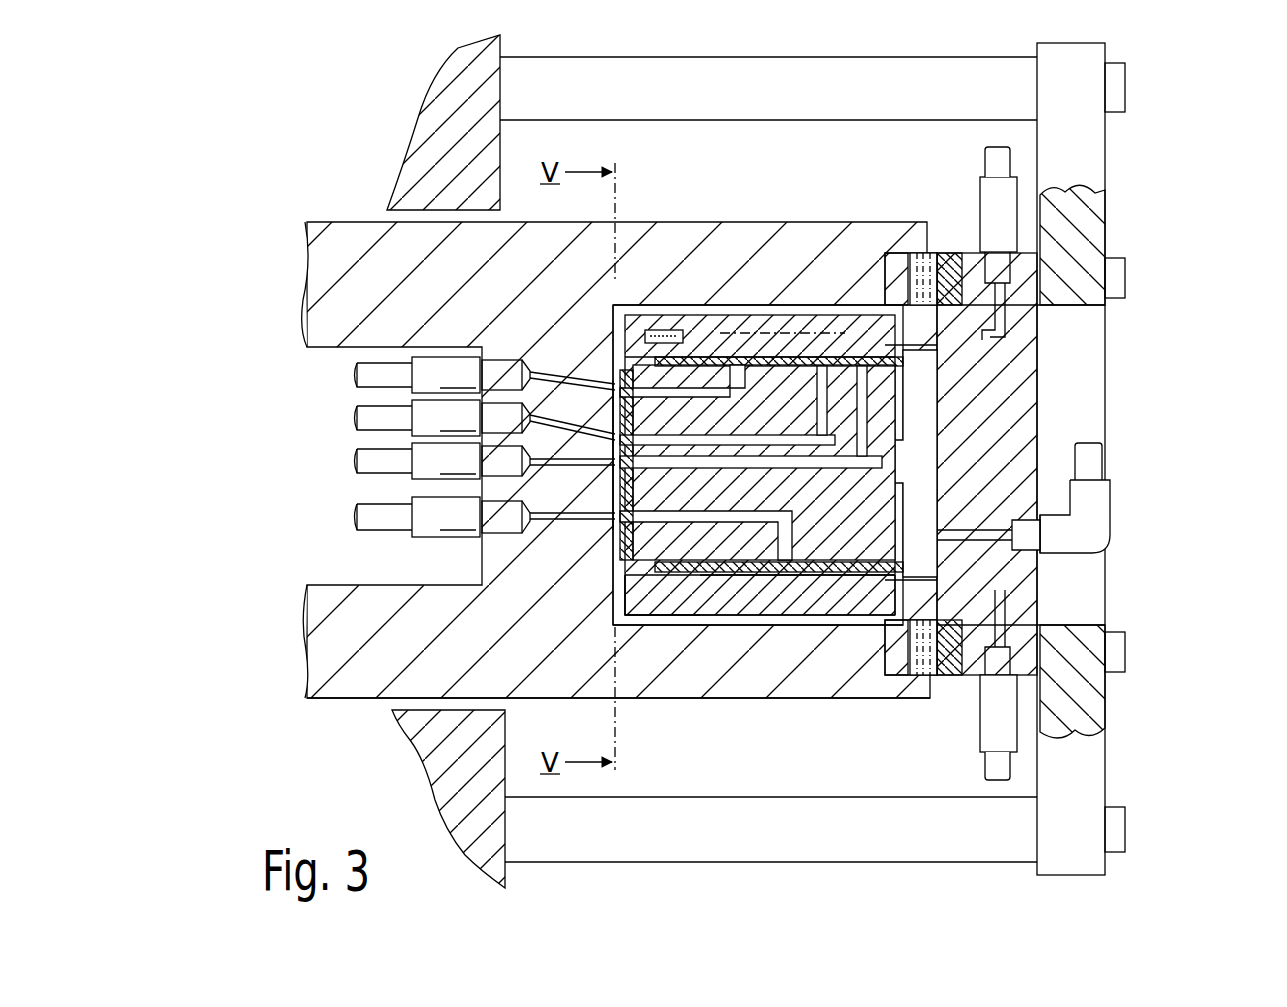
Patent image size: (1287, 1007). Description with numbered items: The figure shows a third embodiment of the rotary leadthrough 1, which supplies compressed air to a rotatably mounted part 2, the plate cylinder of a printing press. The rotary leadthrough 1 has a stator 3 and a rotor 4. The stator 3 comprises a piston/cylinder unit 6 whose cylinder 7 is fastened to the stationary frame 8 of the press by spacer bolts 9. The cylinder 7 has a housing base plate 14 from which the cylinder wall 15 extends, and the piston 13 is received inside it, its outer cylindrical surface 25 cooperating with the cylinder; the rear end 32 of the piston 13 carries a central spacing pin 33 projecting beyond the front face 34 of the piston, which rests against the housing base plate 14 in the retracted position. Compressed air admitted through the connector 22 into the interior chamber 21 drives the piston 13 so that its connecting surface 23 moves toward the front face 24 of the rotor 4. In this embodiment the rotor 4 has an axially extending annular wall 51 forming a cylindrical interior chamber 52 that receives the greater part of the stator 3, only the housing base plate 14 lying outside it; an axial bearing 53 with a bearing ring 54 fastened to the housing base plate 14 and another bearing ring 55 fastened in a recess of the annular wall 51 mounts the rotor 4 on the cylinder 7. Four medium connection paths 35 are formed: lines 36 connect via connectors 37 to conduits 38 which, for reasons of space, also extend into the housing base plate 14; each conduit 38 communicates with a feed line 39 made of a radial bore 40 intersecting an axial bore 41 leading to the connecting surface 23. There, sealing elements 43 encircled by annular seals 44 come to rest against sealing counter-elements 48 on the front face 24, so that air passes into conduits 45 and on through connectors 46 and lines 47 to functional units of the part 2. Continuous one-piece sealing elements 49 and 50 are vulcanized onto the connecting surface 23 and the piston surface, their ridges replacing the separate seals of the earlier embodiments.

The rotary leadthrough 1 is at (367, 197).
The rotatably mounted part 2 is at (330, 305).
The stator 3 is at (1108, 245).
The rotor 4 is at (395, 668).
The piston/cylinder unit 6 is at (1082, 357).
The cylinder 7 is at (762, 598).
The stationary frame 8 is at (490, 853).
The spacer bolts 9 is at (625, 85).
The piston 13 is at (733, 585).
The housing base plate 14 is at (1013, 418).
The cylinder wall 15 is at (790, 322).
The interior chamber 21 is at (917, 557).
The connector 22 is at (1117, 498).
The connecting surface 23 is at (690, 345).
The front face 24 is at (617, 390).
The outer cylindrical surface 25 is at (833, 565).
The rear end 32 is at (1040, 487).
The spacing pin 33 is at (920, 463).
The front face of the piston 34 is at (910, 400).
The medium connection paths 35 is at (560, 520).
The lines 36 is at (995, 165).
The connectors 37 is at (1000, 205).
The conduits 38 is at (1040, 350).
The feed line 39 is at (800, 465).
The radial bore 40 is at (813, 403).
The axial bore 41 is at (733, 413).
The sealing elements 43 is at (645, 487).
The annular seals 44 is at (580, 477).
The conduits 45 is at (533, 422).
The connectors 46 is at (443, 447).
The lines 47 is at (365, 515).
The sealing counter-elements 48 is at (513, 530).
The continuous sealing element 49 is at (712, 615).
The continuous sealing element 50 is at (652, 620).
The annular wall 51 is at (753, 672).
The interior chamber 52 is at (683, 618).
The axial bearing 53 is at (946, 243).
The bearing ring 54 is at (943, 300).
The bearing ring 55 is at (885, 300).